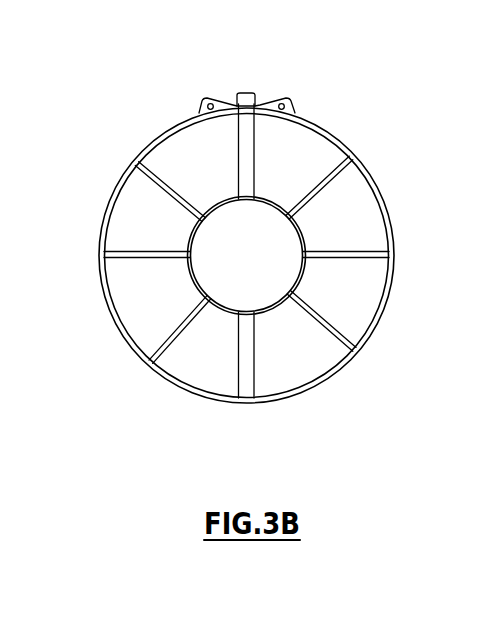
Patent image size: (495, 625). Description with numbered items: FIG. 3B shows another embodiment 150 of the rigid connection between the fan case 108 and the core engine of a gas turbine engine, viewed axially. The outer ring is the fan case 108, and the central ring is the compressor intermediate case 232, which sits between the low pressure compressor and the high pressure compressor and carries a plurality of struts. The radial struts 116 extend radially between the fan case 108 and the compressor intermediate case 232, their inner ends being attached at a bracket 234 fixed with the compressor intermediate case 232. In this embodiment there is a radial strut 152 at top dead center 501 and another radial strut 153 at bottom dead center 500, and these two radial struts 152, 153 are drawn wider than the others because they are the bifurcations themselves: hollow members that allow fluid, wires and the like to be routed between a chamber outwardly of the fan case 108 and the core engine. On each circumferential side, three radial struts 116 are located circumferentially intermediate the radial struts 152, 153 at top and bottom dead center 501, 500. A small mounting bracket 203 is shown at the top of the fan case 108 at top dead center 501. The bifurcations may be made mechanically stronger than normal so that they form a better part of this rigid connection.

The fan case 108 is at (147, 150).
The radial struts 116 is at (172, 193).
The another embodiment 150 is at (375, 129).
The radial strut 152 is at (254, 151).
The radial strut 153 is at (240, 337).
The mounting bracket 203 is at (178, 124).
The compressor intermediate case 232 is at (266, 310).
The bracket 234 is at (186, 261).
The bottom dead center 500 is at (246, 403).
The top dead center 501 is at (242, 93).